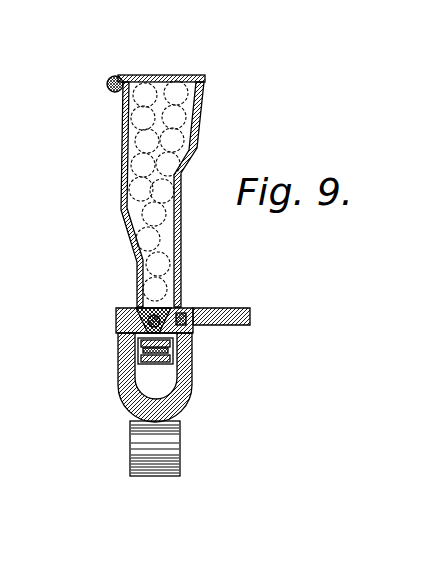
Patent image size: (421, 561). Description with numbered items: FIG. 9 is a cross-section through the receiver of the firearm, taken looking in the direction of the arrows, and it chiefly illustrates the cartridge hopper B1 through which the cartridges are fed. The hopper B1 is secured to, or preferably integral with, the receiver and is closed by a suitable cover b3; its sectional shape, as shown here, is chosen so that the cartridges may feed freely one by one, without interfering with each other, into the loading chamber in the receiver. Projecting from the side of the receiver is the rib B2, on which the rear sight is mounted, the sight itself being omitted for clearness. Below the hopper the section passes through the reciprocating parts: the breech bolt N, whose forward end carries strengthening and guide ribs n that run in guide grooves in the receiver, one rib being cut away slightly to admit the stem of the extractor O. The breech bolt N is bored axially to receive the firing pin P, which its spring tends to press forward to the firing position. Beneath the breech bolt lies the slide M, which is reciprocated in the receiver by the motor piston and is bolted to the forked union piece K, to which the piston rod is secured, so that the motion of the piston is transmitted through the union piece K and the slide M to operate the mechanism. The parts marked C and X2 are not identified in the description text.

The hopper B1 is at (201, 128).
The cover b3 is at (178, 75).
The rib B2 is at (244, 309).
The breech bolt N is at (133, 307).
The extractor O is at (188, 308).
The strengthening and guide ribs n is at (128, 313).
The firing pin P is at (181, 306).
The slide M is at (147, 372).
The union piece K is at (133, 369).
The threaded stem C is at (124, 412).
The screw threads X2 is at (169, 475).